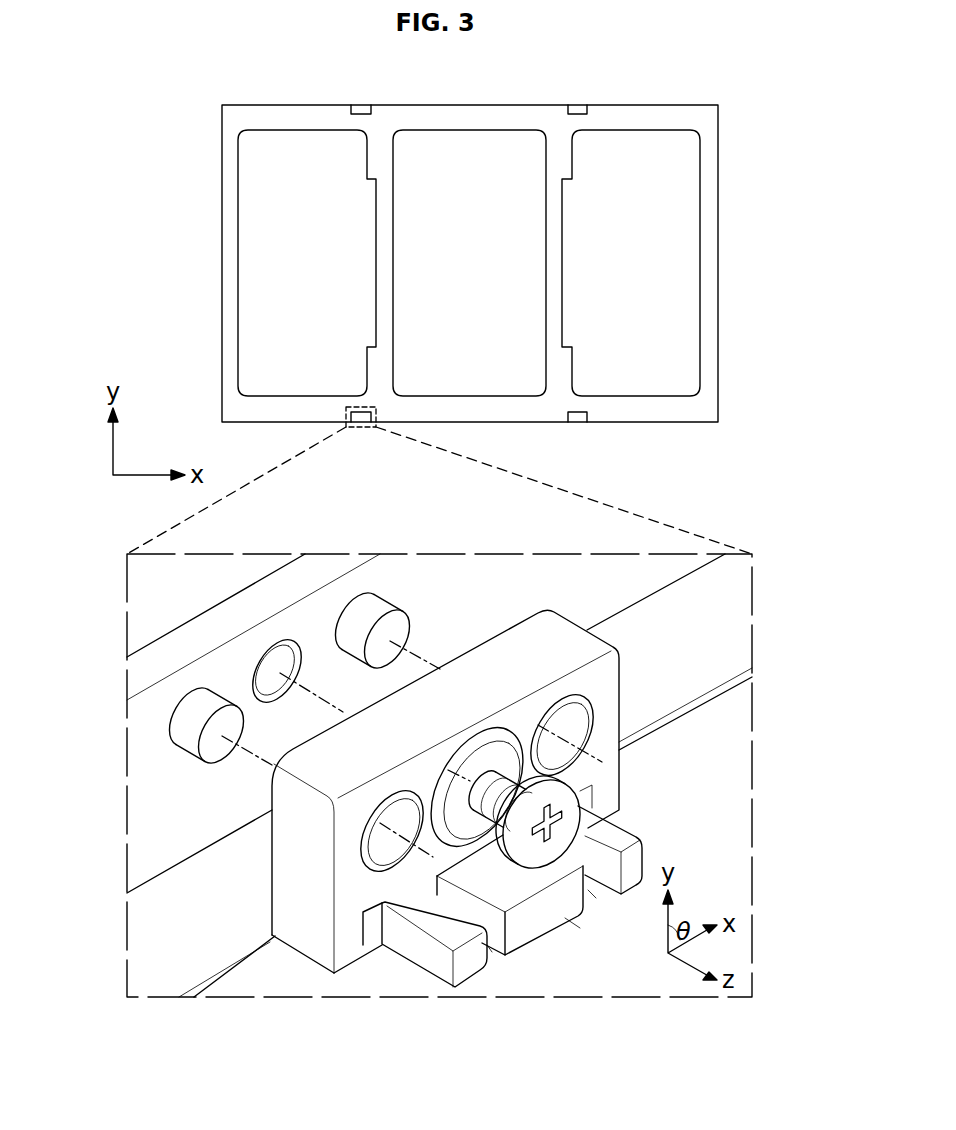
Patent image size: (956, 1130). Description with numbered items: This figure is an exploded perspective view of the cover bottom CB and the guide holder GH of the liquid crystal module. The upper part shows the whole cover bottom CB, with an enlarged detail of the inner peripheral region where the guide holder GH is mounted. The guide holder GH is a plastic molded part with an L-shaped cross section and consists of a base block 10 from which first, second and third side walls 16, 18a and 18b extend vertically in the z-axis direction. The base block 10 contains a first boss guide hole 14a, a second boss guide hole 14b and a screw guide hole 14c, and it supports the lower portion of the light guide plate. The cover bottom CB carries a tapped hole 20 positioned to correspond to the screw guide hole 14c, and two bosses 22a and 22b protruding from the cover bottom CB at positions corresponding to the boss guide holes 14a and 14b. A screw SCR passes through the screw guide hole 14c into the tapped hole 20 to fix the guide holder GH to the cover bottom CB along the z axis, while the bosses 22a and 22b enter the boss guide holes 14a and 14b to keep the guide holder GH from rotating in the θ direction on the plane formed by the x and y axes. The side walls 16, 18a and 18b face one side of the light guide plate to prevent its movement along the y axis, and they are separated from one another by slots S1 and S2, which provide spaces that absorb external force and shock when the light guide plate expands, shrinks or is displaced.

The cover bottom CB is at (718, 283).
The base block 10 is at (297, 908).
The first boss guide hole 14a is at (378, 837).
The second boss guide hole 14b is at (565, 735).
The screw guide hole 14c is at (492, 743).
The first side wall 16 is at (538, 920).
The second side wall 18a is at (468, 965).
The third side wall 18b is at (630, 860).
The tapped hole 20 is at (270, 666).
The first boss 22a is at (183, 727).
The second boss 22b is at (357, 623).
The screw SCR is at (567, 798).
The guide holder GH is at (577, 929).
The first slot S1 is at (492, 953).
The second slot S2 is at (593, 895).